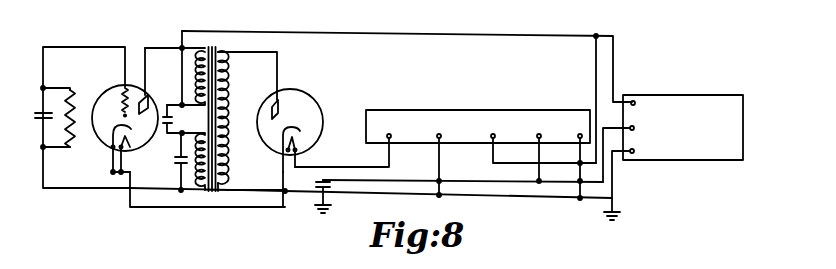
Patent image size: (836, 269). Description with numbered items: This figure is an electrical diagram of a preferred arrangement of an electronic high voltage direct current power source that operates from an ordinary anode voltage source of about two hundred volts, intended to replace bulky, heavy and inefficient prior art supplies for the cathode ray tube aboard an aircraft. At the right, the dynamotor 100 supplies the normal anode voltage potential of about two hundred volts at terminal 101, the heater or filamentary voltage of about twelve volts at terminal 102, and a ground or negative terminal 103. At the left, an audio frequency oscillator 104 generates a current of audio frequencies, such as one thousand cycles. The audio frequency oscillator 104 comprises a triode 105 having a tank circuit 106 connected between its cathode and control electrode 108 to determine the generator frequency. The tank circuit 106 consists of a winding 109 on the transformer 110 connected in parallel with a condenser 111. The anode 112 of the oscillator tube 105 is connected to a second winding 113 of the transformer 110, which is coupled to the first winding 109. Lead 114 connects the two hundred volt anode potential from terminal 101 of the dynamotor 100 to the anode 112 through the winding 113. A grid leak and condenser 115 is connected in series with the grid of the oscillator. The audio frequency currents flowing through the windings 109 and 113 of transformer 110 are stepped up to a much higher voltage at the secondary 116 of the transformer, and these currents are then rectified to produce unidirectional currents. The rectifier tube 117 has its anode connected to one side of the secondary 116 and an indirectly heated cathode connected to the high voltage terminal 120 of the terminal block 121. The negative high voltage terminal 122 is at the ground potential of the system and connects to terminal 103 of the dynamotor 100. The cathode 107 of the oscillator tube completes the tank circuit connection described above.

The dynamotor 100 is at (710, 97).
The terminal 101 is at (636, 100).
The terminal 102 is at (635, 127).
The ground or negative terminal 103 is at (635, 151).
The audio frequency oscillator 104 is at (89, 44).
The triode 105 is at (107, 95).
The tank circuit 106 is at (191, 134).
The cathode 107 is at (108, 130).
The control electrode 108 is at (123, 101).
The winding 109 is at (214, 192).
The transformer 110 is at (223, 53).
The condenser 111 is at (174, 165).
The anode 112 is at (165, 86).
The second winding 113 is at (222, 24).
The lead 114 is at (335, 33).
The grid leak and condenser 115 is at (58, 128).
The secondary 116 is at (223, 184).
The rectifier tube 117 is at (317, 102).
The high voltage terminal 120 is at (391, 138).
The terminal block 121 is at (368, 138).
The negative high voltage terminal 122 is at (441, 138).